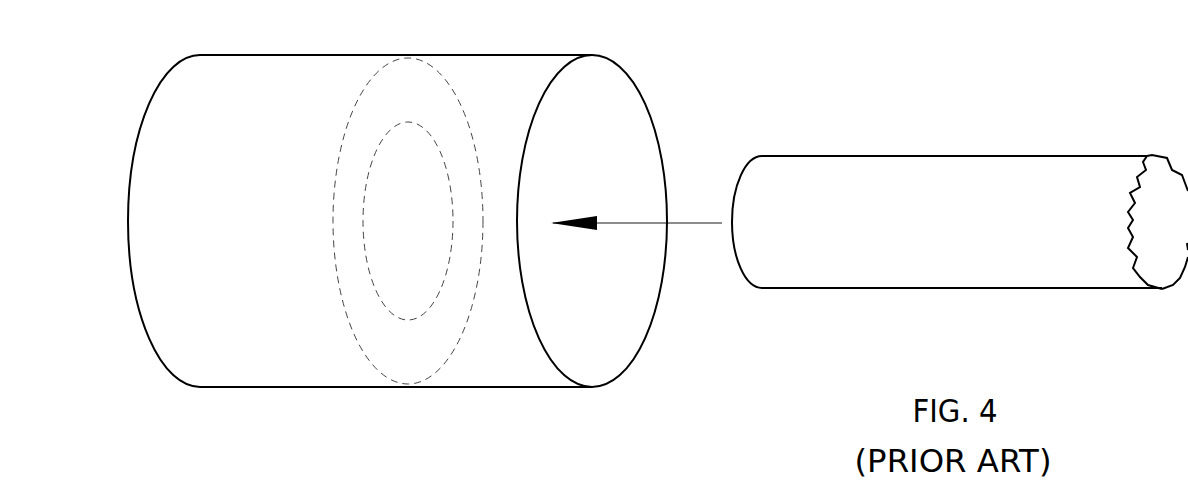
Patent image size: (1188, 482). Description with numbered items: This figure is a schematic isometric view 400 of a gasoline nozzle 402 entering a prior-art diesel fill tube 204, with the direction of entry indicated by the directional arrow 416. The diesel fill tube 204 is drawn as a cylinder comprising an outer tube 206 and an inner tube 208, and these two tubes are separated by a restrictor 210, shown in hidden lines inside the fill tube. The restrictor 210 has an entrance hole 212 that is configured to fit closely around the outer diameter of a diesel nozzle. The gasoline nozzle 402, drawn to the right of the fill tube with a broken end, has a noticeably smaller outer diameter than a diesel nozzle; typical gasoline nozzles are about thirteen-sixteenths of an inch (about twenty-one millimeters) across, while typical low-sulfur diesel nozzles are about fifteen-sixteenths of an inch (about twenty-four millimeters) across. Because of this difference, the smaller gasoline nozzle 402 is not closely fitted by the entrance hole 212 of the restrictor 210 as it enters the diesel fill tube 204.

The diesel fill tube 204 is at (630, 318).
The outer tube 206 is at (500, 378).
The inner tube 208 is at (200, 375).
The restrictor 210 is at (372, 317).
The entrance hole 212 is at (407, 185).
The schematic isometric view 400 is at (960, 183).
The gasoline nozzle 402 is at (1084, 163).
The directional arrow 416 is at (650, 227).